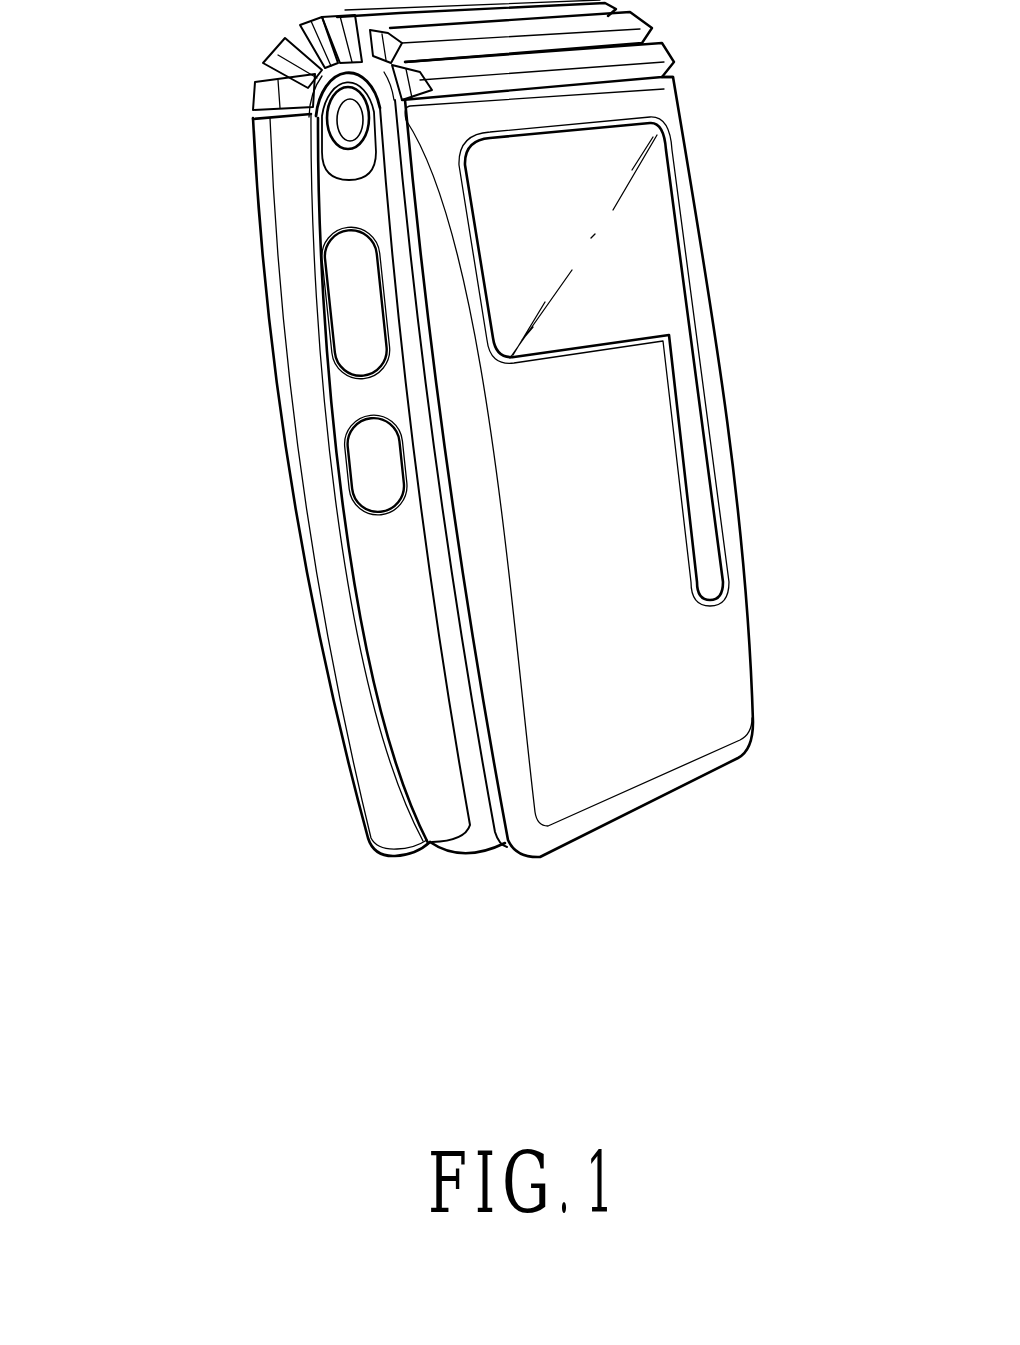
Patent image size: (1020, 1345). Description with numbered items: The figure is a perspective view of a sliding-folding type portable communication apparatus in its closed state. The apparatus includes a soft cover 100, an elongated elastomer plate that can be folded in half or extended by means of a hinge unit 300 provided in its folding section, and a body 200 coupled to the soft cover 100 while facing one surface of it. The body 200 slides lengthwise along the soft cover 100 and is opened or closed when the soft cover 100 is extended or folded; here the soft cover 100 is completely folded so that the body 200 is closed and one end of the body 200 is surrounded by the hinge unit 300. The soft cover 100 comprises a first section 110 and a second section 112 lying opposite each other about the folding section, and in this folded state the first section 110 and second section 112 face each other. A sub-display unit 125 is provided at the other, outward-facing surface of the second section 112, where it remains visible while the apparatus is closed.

The soft cover 100 is at (479, 487).
The first section 110 is at (320, 527).
The second section 112 is at (693, 673).
The sub-display unit 125 is at (650, 228).
The body 200 is at (659, 525).
The hinge unit 300 is at (260, 98).